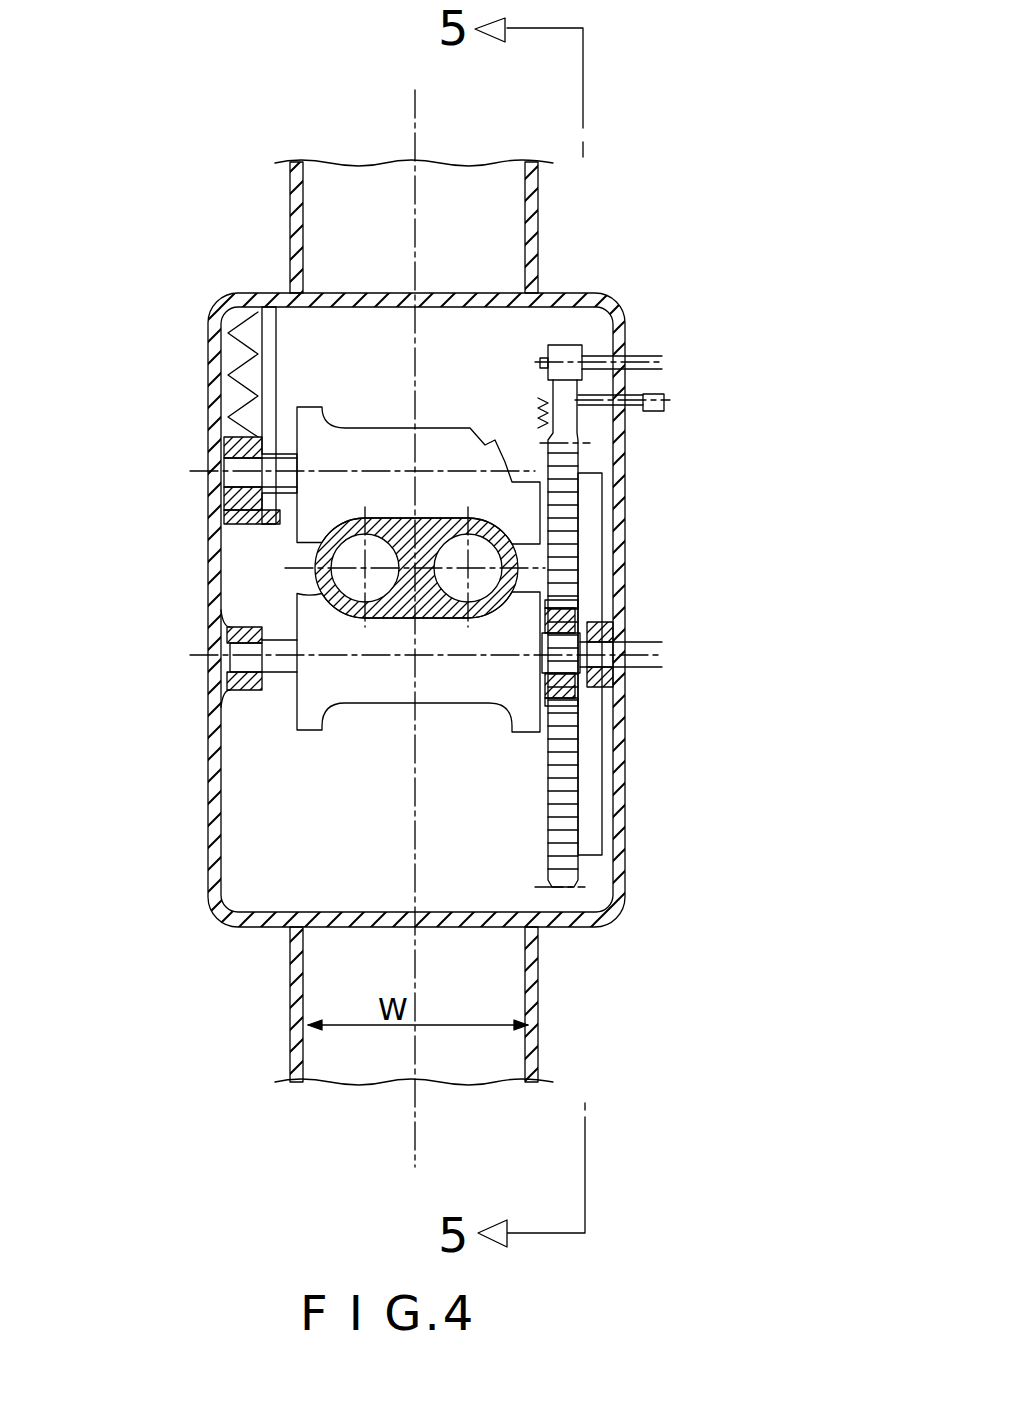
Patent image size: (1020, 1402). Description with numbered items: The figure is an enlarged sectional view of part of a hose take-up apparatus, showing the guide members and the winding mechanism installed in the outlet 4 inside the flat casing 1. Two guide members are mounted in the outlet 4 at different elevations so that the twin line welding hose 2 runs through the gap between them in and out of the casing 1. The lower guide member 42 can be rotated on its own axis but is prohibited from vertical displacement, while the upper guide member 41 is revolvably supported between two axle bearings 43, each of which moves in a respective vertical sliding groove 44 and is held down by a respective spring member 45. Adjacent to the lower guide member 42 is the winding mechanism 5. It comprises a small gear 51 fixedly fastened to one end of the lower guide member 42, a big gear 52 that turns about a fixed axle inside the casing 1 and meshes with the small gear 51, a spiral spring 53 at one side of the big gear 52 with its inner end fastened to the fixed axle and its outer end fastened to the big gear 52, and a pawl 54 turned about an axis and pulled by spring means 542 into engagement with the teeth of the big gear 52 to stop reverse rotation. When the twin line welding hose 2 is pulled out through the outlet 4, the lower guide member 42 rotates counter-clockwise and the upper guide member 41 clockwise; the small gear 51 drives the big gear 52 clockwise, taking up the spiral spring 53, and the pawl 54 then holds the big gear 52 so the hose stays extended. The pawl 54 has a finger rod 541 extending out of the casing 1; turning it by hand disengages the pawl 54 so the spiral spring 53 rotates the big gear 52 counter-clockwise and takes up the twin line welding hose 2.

The flat casing 1 is at (301, 232).
The twin line welding hose 2 is at (357, 553).
The outlet 4 is at (250, 582).
The upper guide member 41 is at (380, 453).
The lower guide member 42 is at (390, 695).
The axle bearings 43 is at (248, 450).
The vertical sliding groove 44 is at (269, 411).
The spring member 45 is at (241, 365).
The winding mechanism 5 is at (691, 552).
The small gear 51 is at (680, 662).
The big gear 52 is at (553, 572).
The spiral spring 53 is at (590, 542).
The pawl 54 is at (557, 418).
The finger rod 541 is at (652, 394).
The spring means 542 is at (542, 418).